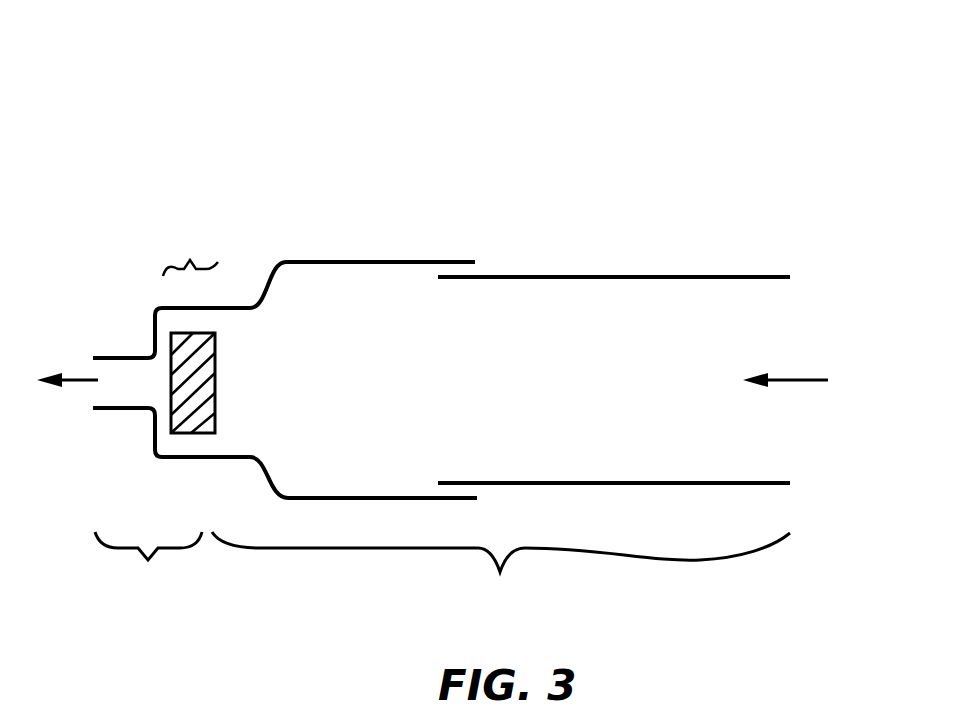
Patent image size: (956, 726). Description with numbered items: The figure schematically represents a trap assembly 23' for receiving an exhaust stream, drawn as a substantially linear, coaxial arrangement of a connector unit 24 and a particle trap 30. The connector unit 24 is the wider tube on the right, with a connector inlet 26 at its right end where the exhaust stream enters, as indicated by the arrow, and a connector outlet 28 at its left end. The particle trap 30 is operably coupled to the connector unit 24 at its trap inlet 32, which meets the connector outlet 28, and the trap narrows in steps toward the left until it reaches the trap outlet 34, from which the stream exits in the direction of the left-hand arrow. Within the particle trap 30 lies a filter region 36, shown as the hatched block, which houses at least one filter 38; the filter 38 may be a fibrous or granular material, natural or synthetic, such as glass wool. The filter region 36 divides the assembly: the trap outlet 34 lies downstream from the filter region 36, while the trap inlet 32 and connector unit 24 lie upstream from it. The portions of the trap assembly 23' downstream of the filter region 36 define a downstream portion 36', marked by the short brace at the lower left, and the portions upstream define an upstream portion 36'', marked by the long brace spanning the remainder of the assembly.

The trap assembly 23' is at (799, 63).
The connector unit 24 is at (643, 277).
The connector inlet 26 is at (788, 277).
The connector outlet 28 is at (438, 277).
The particle trap 30 is at (318, 262).
The trap inlet 32 is at (435, 262).
The trap outlet 34 is at (95, 358).
The filter region 36 is at (203, 184).
The downstream portion 36' is at (148, 570).
The upstream portion 36'' is at (501, 570).
The filter 38 is at (197, 352).